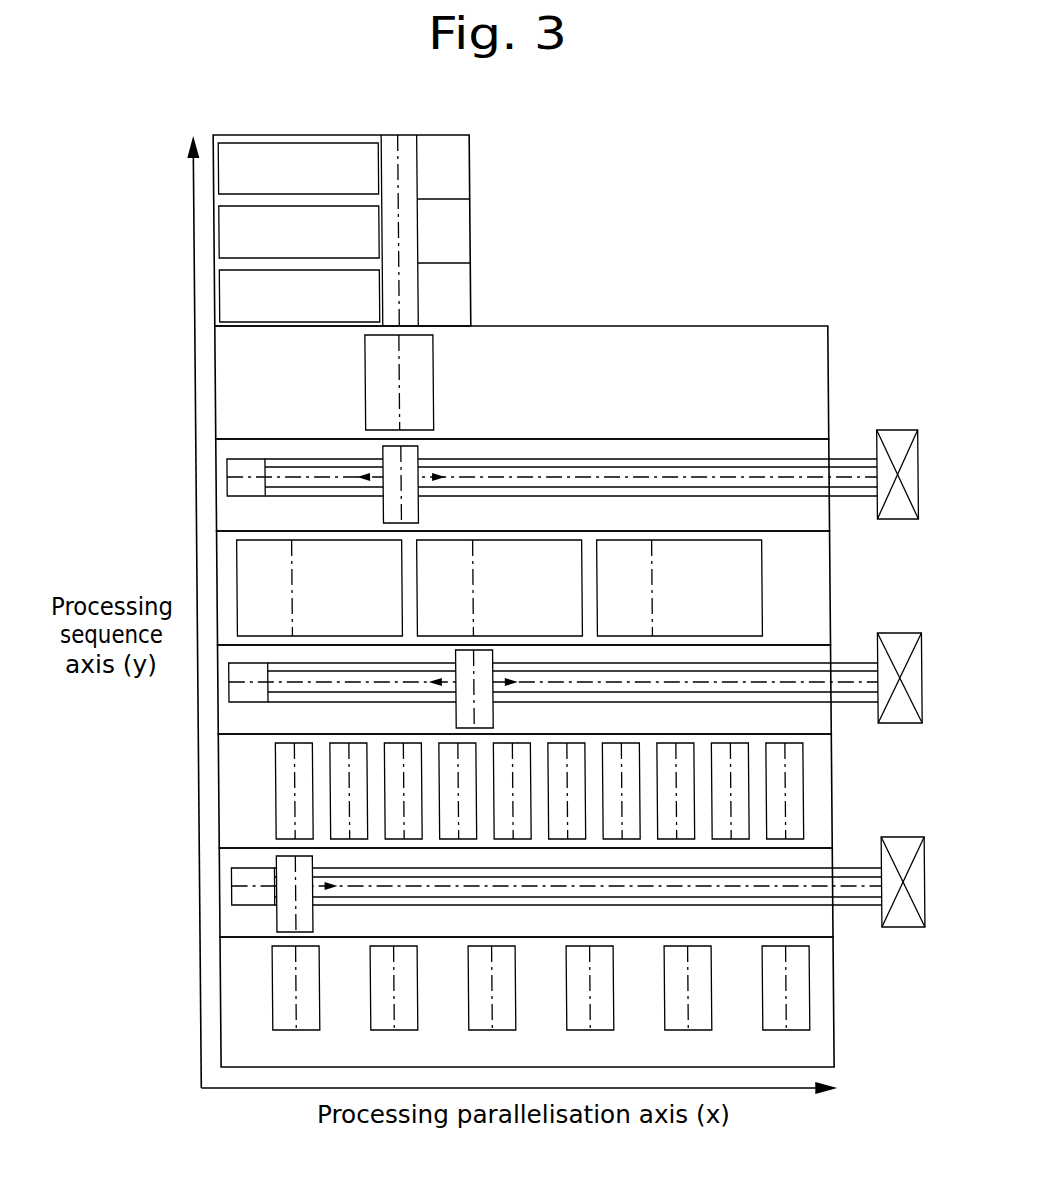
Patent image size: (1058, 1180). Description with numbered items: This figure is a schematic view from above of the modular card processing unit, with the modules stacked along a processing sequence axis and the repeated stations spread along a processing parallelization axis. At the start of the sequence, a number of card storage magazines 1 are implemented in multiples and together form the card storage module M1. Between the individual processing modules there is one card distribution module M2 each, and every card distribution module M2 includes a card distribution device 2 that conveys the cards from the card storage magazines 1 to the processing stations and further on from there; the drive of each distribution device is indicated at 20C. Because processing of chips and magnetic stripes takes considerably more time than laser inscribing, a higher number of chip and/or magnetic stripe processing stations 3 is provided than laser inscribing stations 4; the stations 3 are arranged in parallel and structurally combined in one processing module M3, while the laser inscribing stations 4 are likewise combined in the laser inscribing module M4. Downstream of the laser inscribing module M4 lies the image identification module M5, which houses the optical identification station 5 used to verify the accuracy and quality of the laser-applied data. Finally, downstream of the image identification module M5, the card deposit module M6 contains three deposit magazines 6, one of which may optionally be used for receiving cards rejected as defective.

The card storage magazine 1 is at (275, 990).
The card distribution device 2 is at (379, 510).
The chip and/or magnetic stripe processing station 3 is at (269, 790).
The laser inscribing station 4 is at (757, 585).
The optical identification station 5 is at (430, 383).
The deposit magazine 6 is at (299, 232).
The conveyor drive motor 20C is at (897, 928).
The card storage module M1 is at (574, 1002).
The card distribution module M2 is at (575, 683).
The processing module M3 is at (571, 791).
The laser inscribing module M4 is at (569, 588).
The image identification module M5 is at (567, 382).
The card deposit module M6 is at (387, 230).